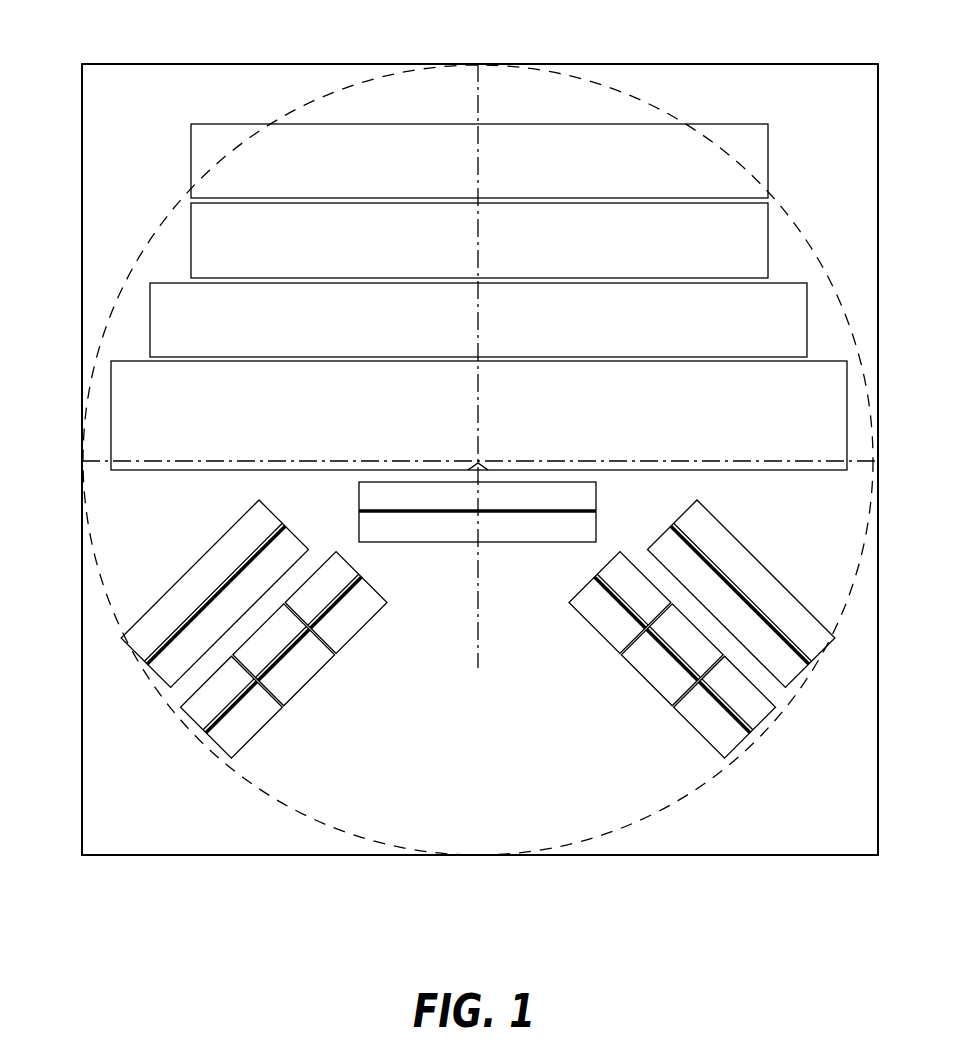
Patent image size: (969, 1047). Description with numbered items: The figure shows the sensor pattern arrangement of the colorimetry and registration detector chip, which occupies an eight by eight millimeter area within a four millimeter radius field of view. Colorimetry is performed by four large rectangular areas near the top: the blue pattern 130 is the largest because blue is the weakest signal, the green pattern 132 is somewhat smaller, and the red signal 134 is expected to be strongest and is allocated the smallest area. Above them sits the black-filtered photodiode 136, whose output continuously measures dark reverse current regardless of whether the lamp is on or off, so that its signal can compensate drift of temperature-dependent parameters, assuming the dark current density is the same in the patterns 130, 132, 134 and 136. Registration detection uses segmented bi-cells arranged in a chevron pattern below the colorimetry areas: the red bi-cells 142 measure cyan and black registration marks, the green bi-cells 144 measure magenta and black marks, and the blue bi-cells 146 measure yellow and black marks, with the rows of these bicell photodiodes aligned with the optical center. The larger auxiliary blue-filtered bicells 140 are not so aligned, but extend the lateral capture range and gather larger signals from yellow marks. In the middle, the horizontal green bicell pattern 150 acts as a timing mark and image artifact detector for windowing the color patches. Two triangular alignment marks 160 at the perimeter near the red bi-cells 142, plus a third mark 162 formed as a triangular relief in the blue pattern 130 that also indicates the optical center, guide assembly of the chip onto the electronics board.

The blue pattern 130 is at (130, 406).
The green pattern 132 is at (160, 318).
The red signal pattern 134 is at (203, 230).
The black-filtered photodiode 136 is at (218, 137).
The auxiliary blue-filtered bicells 140 is at (232, 542).
The red bi-cells 142 is at (227, 742).
The green bi-cells 144 is at (293, 686).
The blue bi-cells 146 is at (347, 635).
The horizontal green bicell pattern 150 is at (532, 533).
The triangular alignment marks 160 is at (478, 658).
The third mark 162 is at (480, 466).